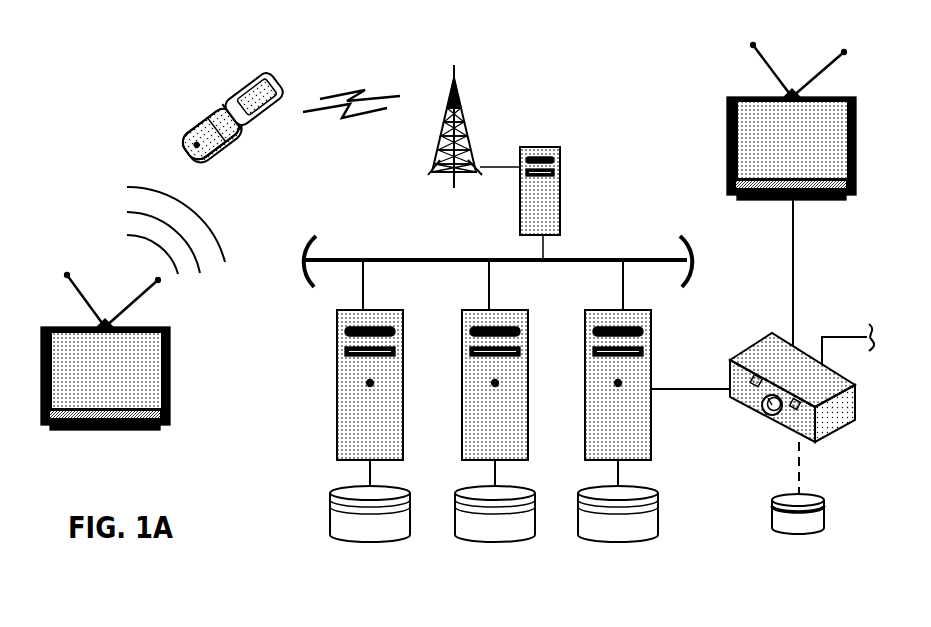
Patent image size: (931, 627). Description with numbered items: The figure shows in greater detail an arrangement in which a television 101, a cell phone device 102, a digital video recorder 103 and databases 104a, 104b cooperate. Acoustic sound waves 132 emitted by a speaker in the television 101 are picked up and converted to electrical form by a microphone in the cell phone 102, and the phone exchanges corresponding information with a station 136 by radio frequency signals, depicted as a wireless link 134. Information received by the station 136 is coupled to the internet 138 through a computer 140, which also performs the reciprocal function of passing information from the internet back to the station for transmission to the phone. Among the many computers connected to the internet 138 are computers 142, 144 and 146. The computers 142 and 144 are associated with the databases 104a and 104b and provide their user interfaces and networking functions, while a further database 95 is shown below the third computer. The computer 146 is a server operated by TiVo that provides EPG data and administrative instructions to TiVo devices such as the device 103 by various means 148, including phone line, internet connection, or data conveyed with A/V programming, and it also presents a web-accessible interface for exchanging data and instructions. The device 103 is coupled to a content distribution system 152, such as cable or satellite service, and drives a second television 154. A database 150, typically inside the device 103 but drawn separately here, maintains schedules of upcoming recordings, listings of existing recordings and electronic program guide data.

The television 101 is at (157, 428).
The cell phone device 102 is at (253, 160).
The acoustic sound waves 132 is at (228, 250).
The wireless link 134 is at (363, 117).
The station 136 is at (462, 123).
The internet 138 is at (607, 260).
The computer 140 is at (560, 147).
The computer 142 is at (385, 310).
The computer 144 is at (510, 310).
The computer 146 is at (633, 310).
The means 148 is at (672, 389).
The database 150 is at (808, 533).
The content distribution system 152 is at (855, 336).
The television 154 is at (810, 200).
The digital video recorder 103 is at (827, 440).
The database 104a is at (380, 545).
The database 104b is at (505, 545).
The database 95 is at (628, 545).